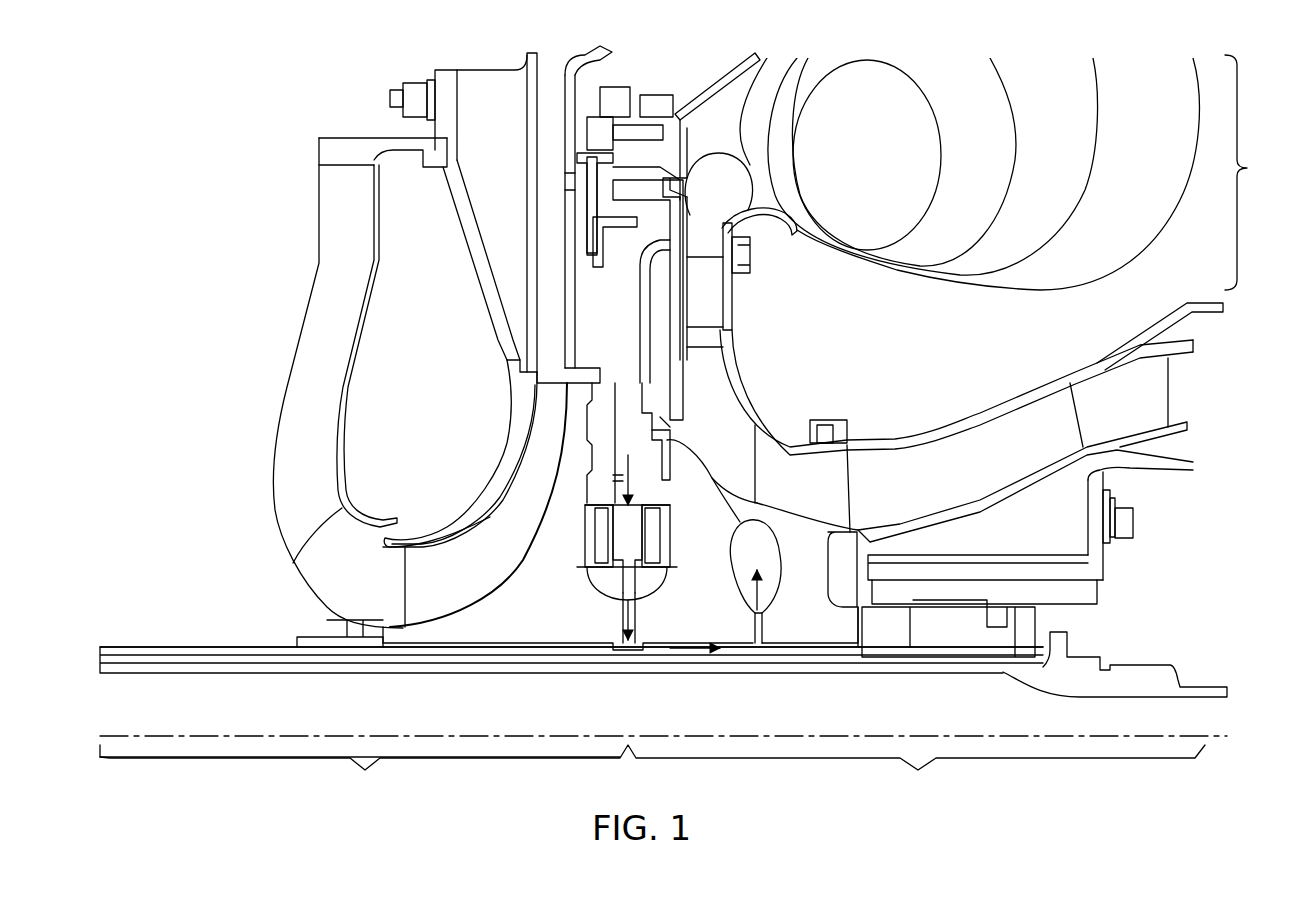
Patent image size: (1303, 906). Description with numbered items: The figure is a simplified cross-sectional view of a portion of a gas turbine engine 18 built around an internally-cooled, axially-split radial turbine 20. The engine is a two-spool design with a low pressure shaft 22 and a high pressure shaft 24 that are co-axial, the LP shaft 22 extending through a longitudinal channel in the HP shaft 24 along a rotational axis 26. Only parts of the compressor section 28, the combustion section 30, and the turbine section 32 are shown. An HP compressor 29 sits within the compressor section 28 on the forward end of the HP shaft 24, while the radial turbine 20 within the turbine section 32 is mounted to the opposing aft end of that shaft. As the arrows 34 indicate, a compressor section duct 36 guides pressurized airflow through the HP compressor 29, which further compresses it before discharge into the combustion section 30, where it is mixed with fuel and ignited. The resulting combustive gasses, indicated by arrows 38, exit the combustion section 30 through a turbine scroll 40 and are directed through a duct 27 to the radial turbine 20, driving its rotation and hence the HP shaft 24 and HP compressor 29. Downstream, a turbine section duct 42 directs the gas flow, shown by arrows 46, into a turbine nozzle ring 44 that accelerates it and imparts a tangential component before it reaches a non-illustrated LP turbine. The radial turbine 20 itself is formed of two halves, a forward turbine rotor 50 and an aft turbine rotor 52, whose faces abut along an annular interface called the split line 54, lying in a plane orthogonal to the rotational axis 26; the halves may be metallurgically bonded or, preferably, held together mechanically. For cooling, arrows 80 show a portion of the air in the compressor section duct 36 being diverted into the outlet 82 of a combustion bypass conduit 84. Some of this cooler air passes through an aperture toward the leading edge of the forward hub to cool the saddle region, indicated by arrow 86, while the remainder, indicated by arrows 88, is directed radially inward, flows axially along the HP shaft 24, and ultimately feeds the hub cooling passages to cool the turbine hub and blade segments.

The gas turbine engine 18 is at (178, 150).
The axially-split radial turbine 20 is at (782, 432).
The low pressure shaft 22 is at (182, 676).
The high pressure shaft 24 is at (192, 647).
The rotational axis 26 is at (320, 735).
The duct 27 is at (712, 280).
The compressor section 28 is at (360, 781).
The HP compressor 29 is at (308, 575).
The combustion section 30 is at (1029, 172).
The turbine section 32 is at (663, 703).
The arrows 34 is at (347, 158).
The compressor section duct 36 is at (292, 395).
The arrows 38 is at (760, 157).
The turbine scroll 40 is at (915, 74).
The turbine section duct 42 is at (980, 423).
The turbine nozzle ring 44 is at (1080, 387).
The arrows 46 is at (932, 478).
The forward turbine rotor 50 is at (620, 516).
The aft turbine rotor 52 is at (824, 589).
The split line 54 is at (760, 498).
The arrows 80 is at (580, 177).
The outlet 82 is at (560, 174).
The combustion bypass conduit 84 is at (668, 380).
The arrow 86 is at (681, 432).
The arrows 88 is at (613, 478).